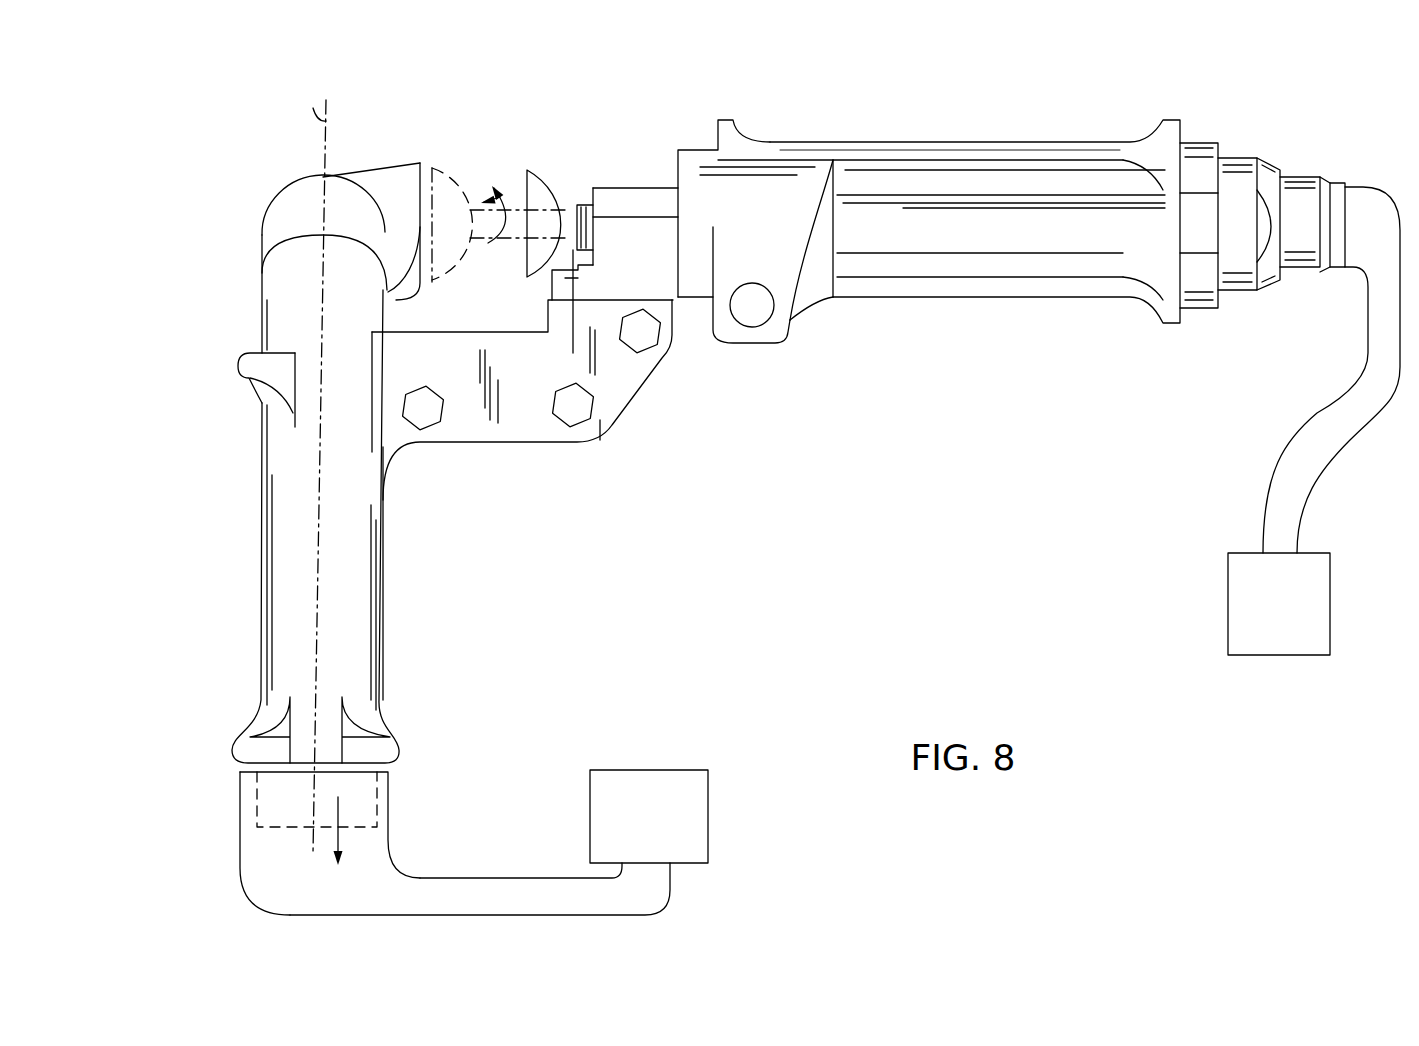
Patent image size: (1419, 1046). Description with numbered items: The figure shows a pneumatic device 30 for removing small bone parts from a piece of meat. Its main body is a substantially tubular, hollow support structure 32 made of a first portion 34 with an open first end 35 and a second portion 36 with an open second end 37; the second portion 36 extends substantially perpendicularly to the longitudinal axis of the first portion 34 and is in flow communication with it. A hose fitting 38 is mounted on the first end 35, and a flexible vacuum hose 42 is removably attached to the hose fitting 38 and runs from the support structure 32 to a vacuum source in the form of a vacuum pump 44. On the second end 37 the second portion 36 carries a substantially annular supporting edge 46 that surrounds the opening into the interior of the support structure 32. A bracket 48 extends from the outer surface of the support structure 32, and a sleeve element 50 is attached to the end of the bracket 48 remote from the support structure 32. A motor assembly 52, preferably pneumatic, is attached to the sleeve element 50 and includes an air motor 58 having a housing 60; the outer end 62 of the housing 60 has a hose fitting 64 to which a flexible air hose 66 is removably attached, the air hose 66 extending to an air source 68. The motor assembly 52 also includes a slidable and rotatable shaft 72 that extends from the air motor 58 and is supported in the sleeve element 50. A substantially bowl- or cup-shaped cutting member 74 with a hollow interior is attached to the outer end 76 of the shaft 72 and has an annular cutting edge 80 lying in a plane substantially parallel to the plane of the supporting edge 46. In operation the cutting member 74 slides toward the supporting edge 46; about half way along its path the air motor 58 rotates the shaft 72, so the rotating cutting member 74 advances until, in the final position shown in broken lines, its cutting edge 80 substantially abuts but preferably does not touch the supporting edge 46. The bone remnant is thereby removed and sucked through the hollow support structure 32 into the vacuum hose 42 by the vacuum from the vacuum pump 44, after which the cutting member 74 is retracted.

The pneumatic device 30 is at (255, 160).
The support structure 32 is at (243, 487).
The first portion 34 is at (360, 568).
The first end 35 is at (228, 765).
The second portion 36 is at (362, 178).
The second end 37 is at (422, 166).
The hose fitting 38 is at (255, 815).
The vacuum hose 42 is at (473, 893).
The vacuum pump 44 is at (632, 838).
The supporting edge 46 is at (440, 176).
The bracket 48 is at (528, 432).
The sleeve element 50 is at (652, 285).
The motor assembly 52 is at (807, 126).
The air motor 58 is at (1041, 128).
The housing 60 is at (890, 143).
The outer end 62 is at (1244, 132).
The hose fitting 64 is at (1293, 178).
The air hose 66 is at (1367, 348).
The air source 68 is at (1262, 623).
The shaft 72 is at (596, 232).
The cutting member 74 is at (553, 178).
The outer end 76 is at (572, 190).
The cutting edge 80 is at (526, 182).